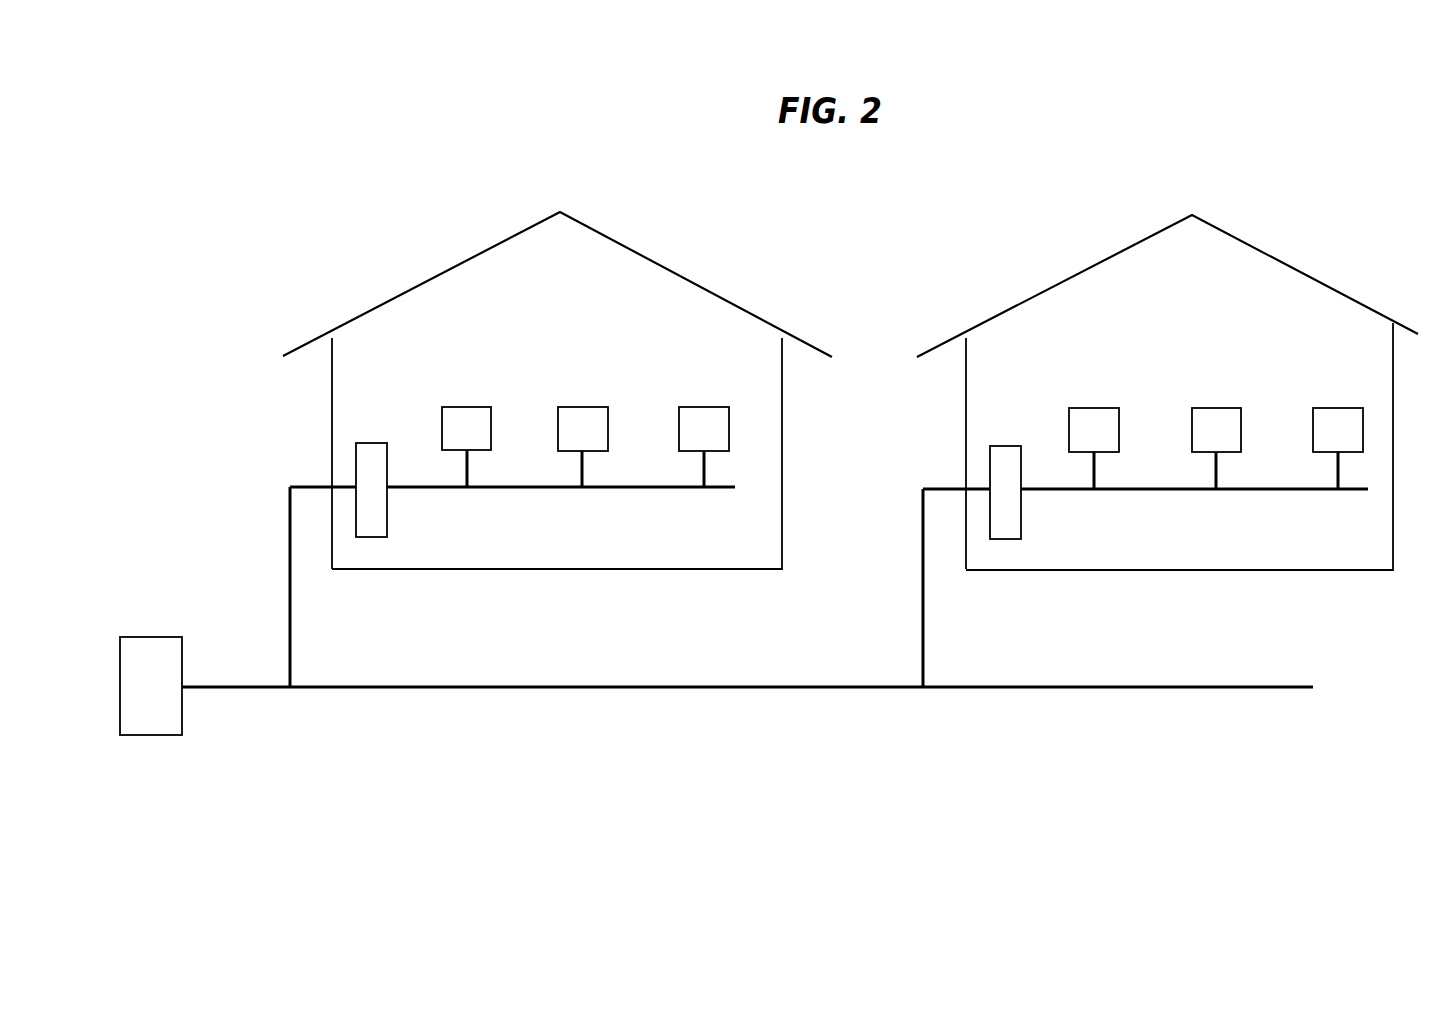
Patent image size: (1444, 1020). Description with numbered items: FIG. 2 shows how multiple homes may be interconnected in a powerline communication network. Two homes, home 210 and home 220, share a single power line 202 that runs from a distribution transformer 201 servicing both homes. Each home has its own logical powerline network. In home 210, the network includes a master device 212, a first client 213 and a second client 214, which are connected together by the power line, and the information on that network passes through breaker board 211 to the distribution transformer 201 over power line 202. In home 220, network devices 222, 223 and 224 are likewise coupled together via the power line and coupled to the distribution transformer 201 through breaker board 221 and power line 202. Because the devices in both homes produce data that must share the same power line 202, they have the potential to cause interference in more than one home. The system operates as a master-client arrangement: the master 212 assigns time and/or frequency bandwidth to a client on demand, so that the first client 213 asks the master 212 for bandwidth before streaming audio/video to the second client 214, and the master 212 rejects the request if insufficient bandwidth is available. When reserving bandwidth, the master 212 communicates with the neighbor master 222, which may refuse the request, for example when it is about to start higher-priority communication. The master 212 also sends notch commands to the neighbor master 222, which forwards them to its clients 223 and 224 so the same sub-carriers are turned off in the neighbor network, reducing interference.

The distribution transformer 201 is at (156, 735).
The power line 202 is at (632, 687).
The home 210 is at (685, 275).
The breaker board 211 is at (372, 443).
The master device 212 is at (467, 407).
The client 1 213 is at (582, 407).
The client 2 214 is at (704, 407).
The home 220 is at (1318, 282).
The breaker board 221 is at (1005, 446).
The neighbor master device 222 is at (1094, 408).
The client 223 is at (1216, 408).
The client 224 is at (1338, 408).